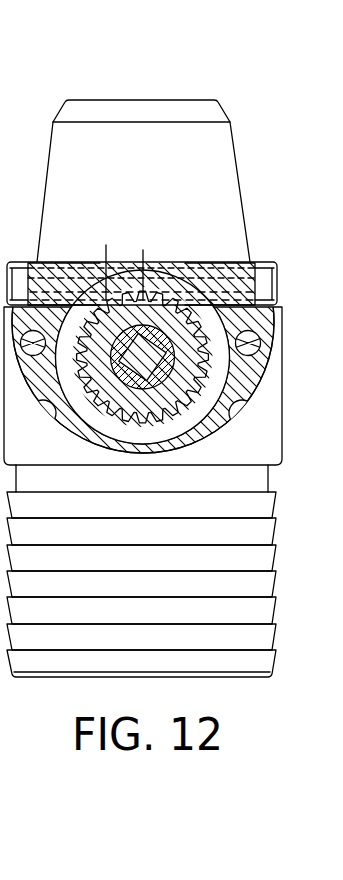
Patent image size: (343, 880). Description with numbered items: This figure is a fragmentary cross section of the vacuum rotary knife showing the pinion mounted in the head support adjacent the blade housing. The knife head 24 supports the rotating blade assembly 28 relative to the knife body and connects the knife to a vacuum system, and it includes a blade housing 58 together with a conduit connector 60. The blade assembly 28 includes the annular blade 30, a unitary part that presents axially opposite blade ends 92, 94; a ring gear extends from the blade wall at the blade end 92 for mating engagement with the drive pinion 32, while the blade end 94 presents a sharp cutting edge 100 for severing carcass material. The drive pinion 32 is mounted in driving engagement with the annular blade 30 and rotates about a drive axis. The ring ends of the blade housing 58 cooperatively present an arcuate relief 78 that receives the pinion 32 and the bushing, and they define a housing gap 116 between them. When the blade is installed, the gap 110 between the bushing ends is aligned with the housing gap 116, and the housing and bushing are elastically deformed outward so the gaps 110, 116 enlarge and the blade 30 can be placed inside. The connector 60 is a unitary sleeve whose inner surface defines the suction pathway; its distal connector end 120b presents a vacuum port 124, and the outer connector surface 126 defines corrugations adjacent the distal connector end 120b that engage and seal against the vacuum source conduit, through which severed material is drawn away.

The blade end 94 is at (236, 90).
The cutting edge 100 is at (68, 100).
The rotating blade assembly 28 is at (233, 163).
The annular blade 30 is at (227, 197).
The blade end 92 is at (265, 245).
The knife head 24 is at (265, 455).
The drive pinion 32 is at (110, 395).
The blade housing 58 is at (277, 283).
The housing gap 116 is at (132, 238).
The gap 110 is at (143, 245).
The arcuate relief 78 is at (106, 245).
The conduit connector 60 is at (256, 678).
The outer connector surface 126 is at (262, 612).
The vacuum port 124 is at (244, 695).
The distal connector end 120b is at (62, 693).